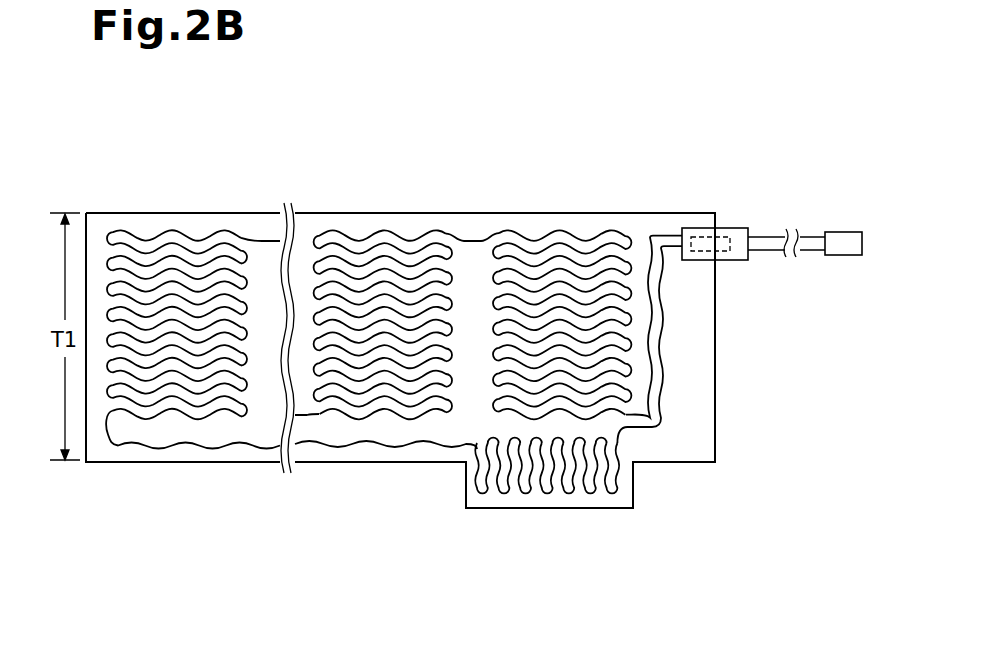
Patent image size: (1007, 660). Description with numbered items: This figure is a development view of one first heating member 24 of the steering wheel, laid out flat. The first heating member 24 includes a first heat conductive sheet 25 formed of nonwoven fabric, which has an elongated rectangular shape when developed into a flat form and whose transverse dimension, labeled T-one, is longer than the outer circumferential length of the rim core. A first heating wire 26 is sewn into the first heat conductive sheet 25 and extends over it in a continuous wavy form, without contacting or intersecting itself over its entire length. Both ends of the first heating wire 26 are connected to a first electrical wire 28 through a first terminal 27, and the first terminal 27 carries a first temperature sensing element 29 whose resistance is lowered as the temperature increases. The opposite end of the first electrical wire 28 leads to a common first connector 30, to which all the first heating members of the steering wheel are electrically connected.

The first heating member 24 is at (575, 168).
The first heat conductive sheet 25 is at (522, 213).
The first heating wire 26 is at (568, 232).
The first terminal 27 is at (735, 228).
The first electrical wire 28 is at (770, 236).
The first temperature sensing element 29 is at (700, 232).
The first connector 30 is at (838, 232).